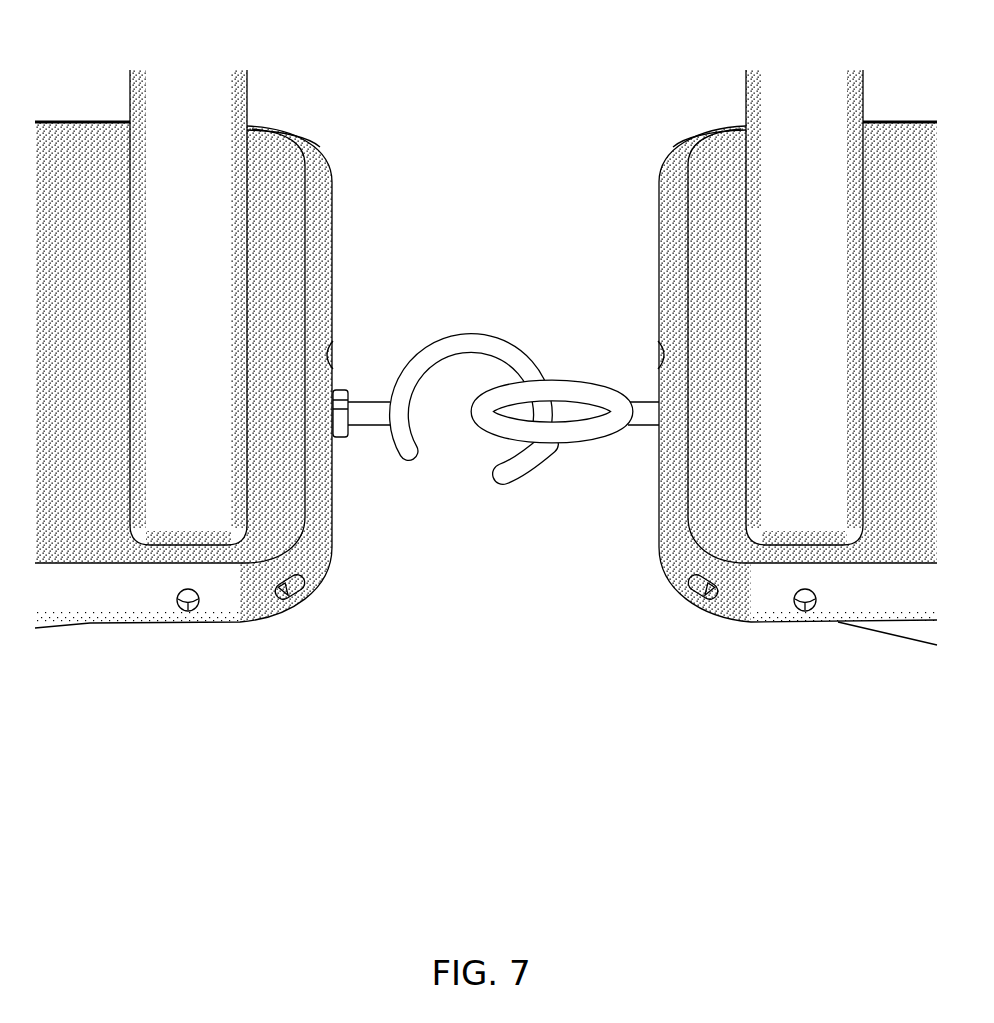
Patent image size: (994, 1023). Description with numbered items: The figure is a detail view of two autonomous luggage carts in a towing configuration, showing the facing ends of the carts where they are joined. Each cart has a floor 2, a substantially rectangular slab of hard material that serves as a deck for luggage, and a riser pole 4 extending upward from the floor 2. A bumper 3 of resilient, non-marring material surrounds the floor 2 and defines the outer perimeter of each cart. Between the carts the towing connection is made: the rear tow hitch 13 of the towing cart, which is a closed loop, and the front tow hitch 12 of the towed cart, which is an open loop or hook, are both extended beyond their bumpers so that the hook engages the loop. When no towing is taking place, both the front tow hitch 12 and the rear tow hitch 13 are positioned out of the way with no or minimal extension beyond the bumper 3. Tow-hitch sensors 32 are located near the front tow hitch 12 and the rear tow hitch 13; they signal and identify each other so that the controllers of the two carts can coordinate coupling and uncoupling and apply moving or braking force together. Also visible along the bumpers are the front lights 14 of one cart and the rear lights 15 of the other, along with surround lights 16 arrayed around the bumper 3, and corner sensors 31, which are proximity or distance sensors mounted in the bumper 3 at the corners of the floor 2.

The floor 2 is at (58, 130).
The bumper 3 is at (100, 617).
The riser pole 4 is at (237, 117).
The front tow hitch 12 is at (458, 337).
The rear tow hitch 13 is at (596, 437).
The front lights 14 is at (333, 197).
The rear lights 15 is at (659, 197).
The surround lights 16 is at (188, 612).
The corner sensors 31 is at (318, 152).
The tow-hitch sensors 32 is at (366, 342).